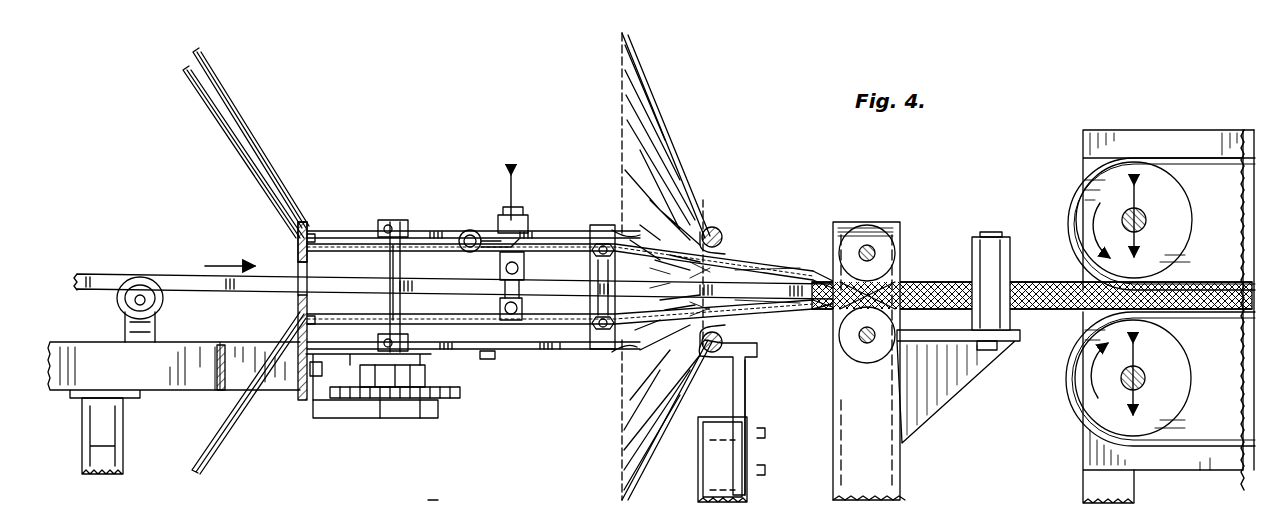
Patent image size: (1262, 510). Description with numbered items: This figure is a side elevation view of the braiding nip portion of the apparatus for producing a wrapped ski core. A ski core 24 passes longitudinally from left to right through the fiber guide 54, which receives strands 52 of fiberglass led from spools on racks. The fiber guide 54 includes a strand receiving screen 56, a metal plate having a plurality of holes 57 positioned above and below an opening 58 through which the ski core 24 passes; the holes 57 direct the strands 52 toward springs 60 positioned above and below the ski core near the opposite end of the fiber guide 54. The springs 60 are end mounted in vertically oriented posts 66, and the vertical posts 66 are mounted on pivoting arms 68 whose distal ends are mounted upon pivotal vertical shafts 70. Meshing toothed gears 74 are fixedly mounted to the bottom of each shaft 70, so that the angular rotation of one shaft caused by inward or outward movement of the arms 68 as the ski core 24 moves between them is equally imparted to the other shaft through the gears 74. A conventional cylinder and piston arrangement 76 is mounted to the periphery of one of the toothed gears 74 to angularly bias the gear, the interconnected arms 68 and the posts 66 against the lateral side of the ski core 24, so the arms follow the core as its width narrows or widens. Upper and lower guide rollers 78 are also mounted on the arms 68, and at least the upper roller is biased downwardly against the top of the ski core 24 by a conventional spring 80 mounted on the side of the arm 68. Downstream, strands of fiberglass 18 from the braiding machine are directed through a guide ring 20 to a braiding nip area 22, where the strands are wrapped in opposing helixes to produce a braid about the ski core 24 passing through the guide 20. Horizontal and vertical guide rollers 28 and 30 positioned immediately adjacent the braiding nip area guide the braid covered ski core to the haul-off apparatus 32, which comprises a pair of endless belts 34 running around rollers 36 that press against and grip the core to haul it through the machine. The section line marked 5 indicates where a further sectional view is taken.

The section line 5- 5 is at (650, 176).
The strands of fiberglass 18 is at (747, 250).
The guide ring 20 is at (713, 230).
The braiding nip area 22 is at (780, 248).
The ski core 24 is at (172, 281).
The horizontal guide roller 28 is at (905, 270).
The vertical guide roller 30 is at (1008, 257).
The haul-off apparatus 32 is at (1185, 146).
The endless belts 34 is at (1226, 167).
The rollers 36 is at (1103, 198).
The strands 52 is at (232, 143).
The fiber guide 54 is at (418, 227).
The strand receiving screen 56 is at (304, 223).
The holes 57 is at (312, 235).
The opening 58 is at (296, 262).
The springs 60 is at (437, 505).
The vertical posts 66 is at (581, 335).
The pivoting arms 68 is at (554, 229).
The pivotal vertical shafts 70 is at (400, 312).
The toothed gears 74 is at (462, 397).
The cylinder and piston arrangement 76 is at (352, 418).
The guide rollers 78 is at (525, 268).
The spring 80 is at (506, 233).